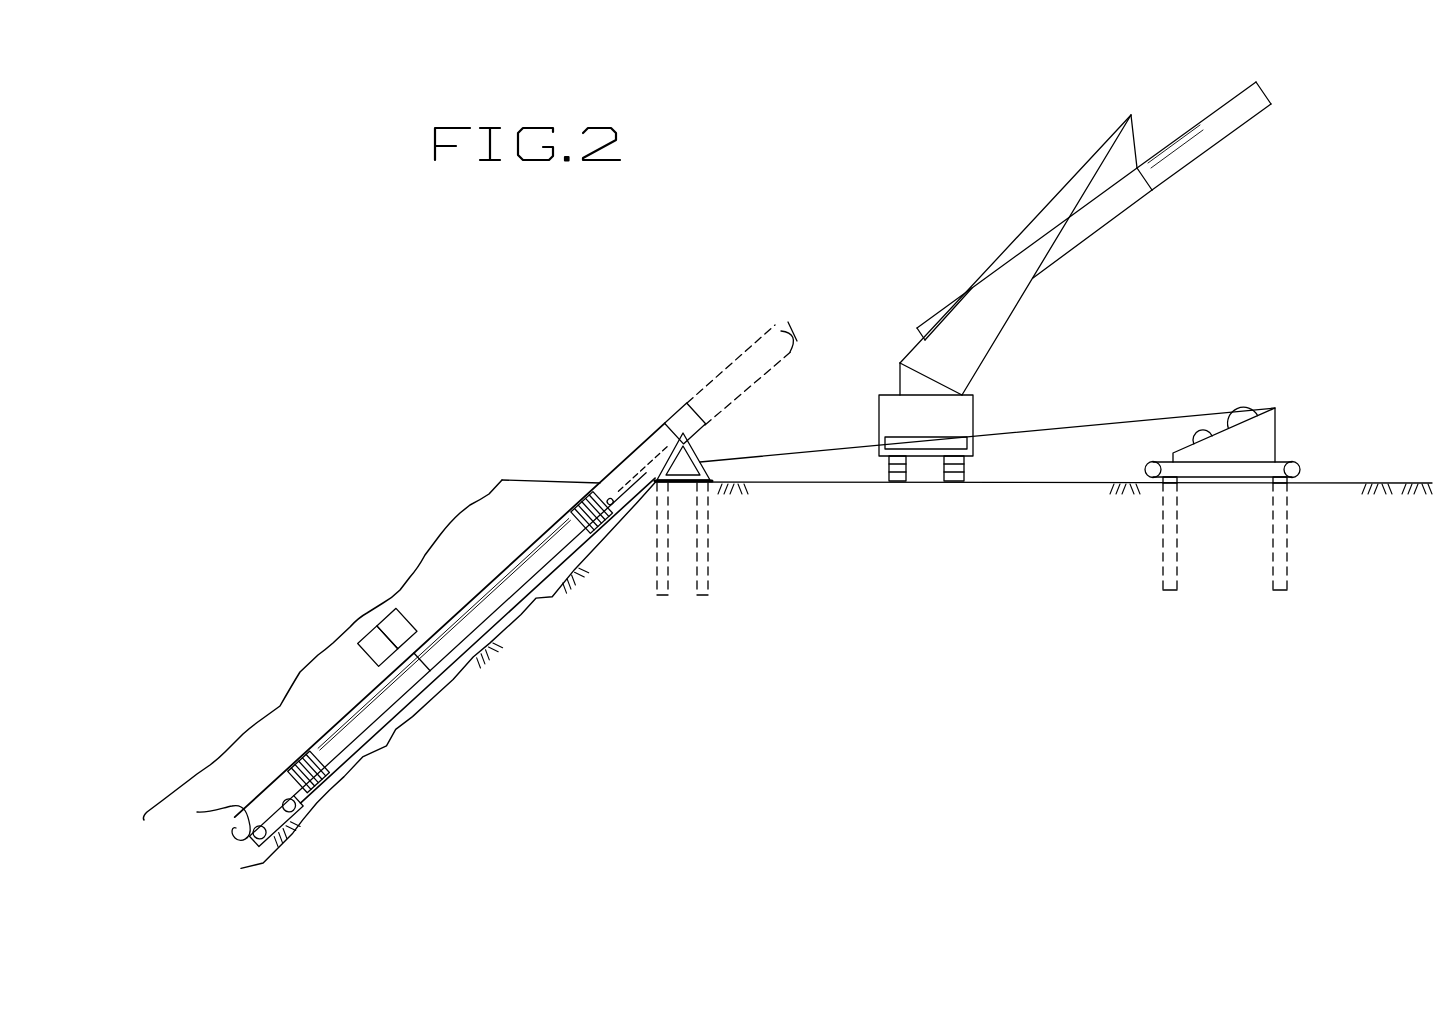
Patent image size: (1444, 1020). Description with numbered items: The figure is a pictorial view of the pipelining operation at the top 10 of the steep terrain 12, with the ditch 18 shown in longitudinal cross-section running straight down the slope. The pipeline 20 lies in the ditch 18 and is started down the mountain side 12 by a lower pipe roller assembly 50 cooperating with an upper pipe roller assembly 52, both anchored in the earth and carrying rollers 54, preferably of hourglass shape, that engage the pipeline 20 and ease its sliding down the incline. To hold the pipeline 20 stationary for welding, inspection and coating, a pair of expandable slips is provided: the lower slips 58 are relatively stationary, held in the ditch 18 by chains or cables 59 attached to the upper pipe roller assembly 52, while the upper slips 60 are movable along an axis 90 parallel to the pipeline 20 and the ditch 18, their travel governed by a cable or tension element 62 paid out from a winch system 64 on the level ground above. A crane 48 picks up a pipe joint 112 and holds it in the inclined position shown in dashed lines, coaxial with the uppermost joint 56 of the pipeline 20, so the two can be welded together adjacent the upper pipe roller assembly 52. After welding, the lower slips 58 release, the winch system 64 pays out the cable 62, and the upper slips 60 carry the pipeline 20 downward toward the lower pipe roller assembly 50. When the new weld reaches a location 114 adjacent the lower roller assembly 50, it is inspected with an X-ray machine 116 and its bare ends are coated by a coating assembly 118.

The top of steep terrain 10 is at (812, 505).
The steep terrain 12 is at (332, 647).
The ditch 18 is at (553, 647).
The pipeline 20 is at (513, 557).
The crane 48 is at (1015, 298).
The lower pipe roller assembly 50 is at (272, 806).
The upper pipe roller assembly 52 is at (728, 528).
The rollers 54 is at (201, 823).
The uppermost joint 56 is at (655, 432).
The lower slips 58 is at (302, 735).
The chains or cables 59 is at (420, 757).
The upper slips 60 is at (580, 478).
The cable or tension element 62 is at (780, 452).
The winch system 64 is at (1318, 327).
The axis 90 is at (800, 372).
The pipe joint 112 is at (1200, 113).
The location 114 is at (435, 598).
The X-ray machine 116 is at (372, 640).
The coating assembly 118 is at (398, 612).